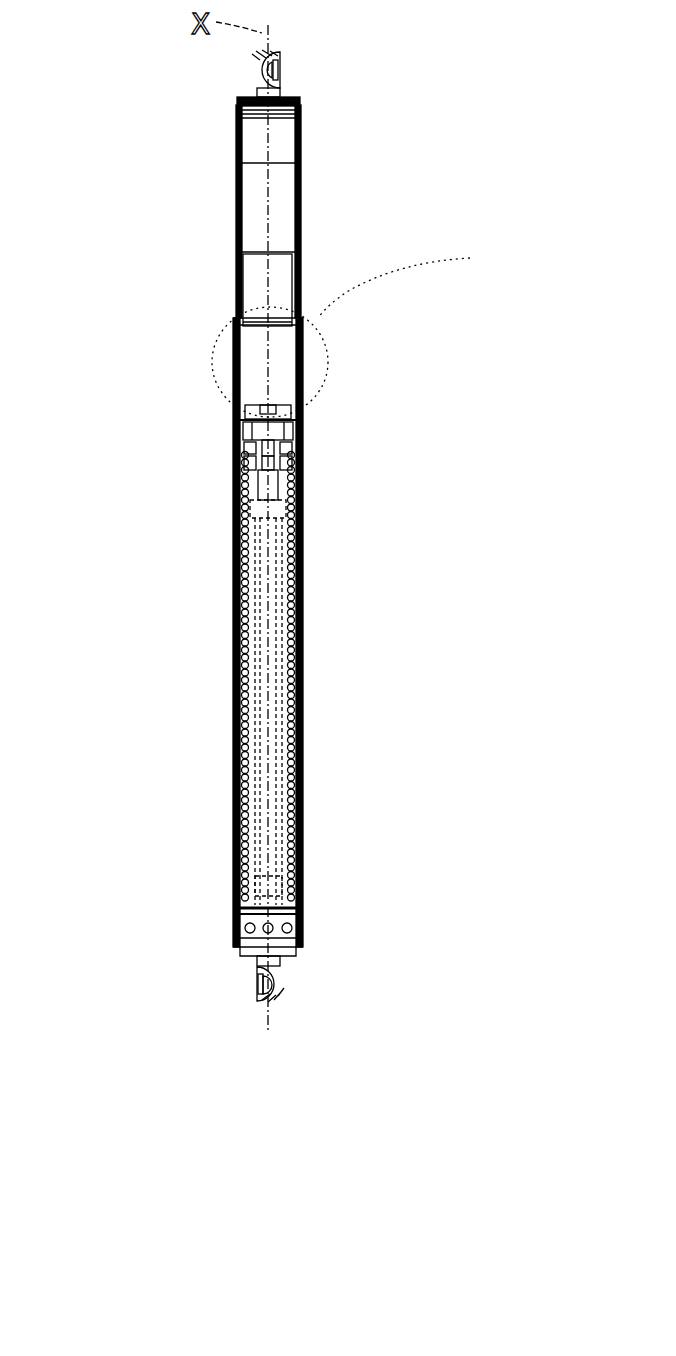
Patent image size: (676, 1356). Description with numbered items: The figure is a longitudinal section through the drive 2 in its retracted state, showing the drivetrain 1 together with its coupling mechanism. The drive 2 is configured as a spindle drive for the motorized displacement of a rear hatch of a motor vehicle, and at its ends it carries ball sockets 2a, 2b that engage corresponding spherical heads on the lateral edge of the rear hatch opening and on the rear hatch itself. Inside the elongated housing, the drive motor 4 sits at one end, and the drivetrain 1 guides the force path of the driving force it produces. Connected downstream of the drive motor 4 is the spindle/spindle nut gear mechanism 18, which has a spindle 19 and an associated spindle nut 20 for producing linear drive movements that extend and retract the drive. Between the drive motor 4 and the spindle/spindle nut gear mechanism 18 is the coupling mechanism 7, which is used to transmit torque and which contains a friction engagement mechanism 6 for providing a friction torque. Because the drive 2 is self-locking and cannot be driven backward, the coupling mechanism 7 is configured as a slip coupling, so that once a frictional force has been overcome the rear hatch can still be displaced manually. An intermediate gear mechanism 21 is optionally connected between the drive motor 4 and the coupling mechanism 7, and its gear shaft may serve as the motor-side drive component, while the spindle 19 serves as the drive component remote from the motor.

The drivetrain 1 is at (150, 247).
The drive 2 is at (186, 136).
The ball socket 2a is at (282, 58).
The ball socket 2b is at (280, 992).
The drive motor 4 is at (281, 196).
The friction engagement mechanism 6 is at (308, 358).
The coupling mechanism 7 is at (268, 437).
The spindle/spindle nut gear mechanism 18 is at (212, 450).
The spindle 19 is at (302, 636).
The spindle nut 20 is at (300, 548).
The intermediate gear mechanism 21 is at (277, 272).